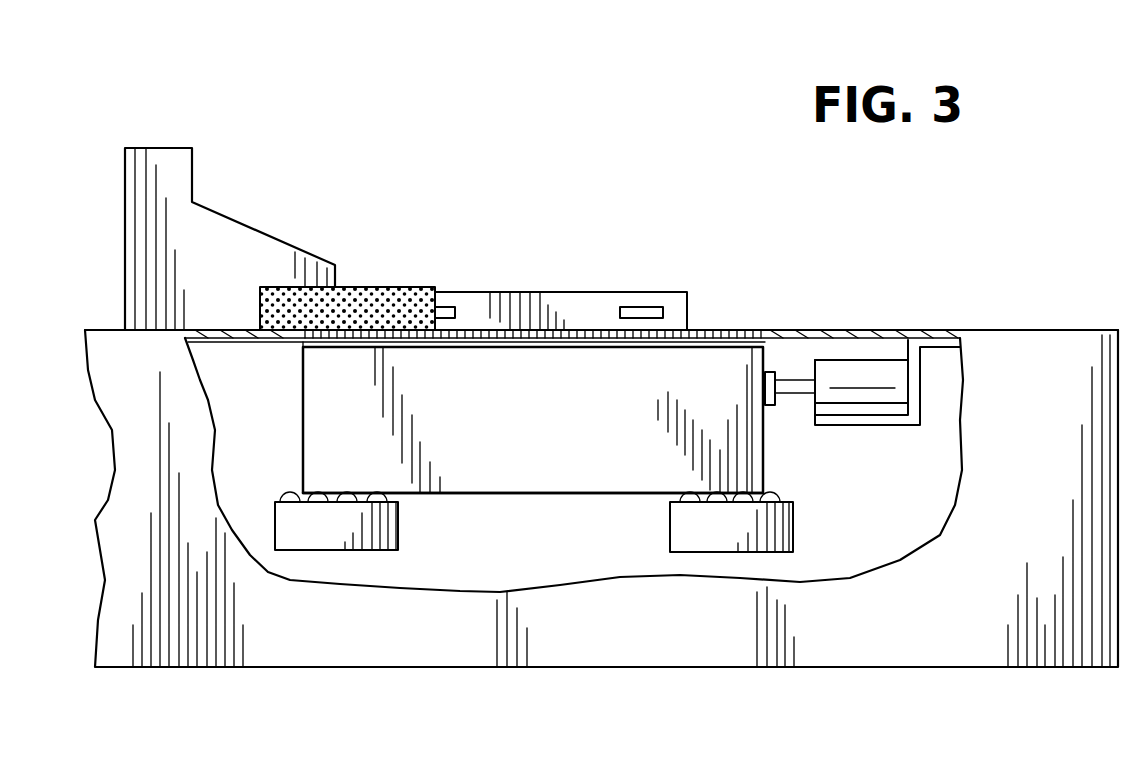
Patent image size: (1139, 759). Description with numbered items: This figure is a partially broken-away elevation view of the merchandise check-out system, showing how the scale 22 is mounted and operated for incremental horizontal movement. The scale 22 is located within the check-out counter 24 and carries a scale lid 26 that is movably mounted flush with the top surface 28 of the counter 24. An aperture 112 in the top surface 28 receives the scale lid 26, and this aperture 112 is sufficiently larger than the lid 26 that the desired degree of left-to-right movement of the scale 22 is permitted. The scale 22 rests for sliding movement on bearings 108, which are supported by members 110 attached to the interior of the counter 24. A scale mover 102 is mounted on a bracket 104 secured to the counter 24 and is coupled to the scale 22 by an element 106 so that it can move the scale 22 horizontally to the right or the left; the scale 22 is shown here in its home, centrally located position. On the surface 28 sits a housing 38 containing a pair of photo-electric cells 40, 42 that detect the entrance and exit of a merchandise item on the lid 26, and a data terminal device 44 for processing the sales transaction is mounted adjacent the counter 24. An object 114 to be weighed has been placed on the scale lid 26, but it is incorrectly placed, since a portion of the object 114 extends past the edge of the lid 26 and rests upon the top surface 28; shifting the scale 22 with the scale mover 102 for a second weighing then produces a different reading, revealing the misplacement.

The scale 22 is at (540, 510).
The check-out counter 24 is at (895, 640).
The scale lid 26 is at (725, 330).
The top surface 28 is at (908, 330).
The housing 38 is at (562, 292).
The photo-electric cell 40 is at (452, 307).
The photo-electric cell 42 is at (642, 307).
The data terminal device 44 is at (142, 210).
The scale mover 102 is at (890, 376).
The bracket 104 is at (893, 425).
The element 106 is at (797, 395).
The bearings 108 is at (291, 493).
The members 110 is at (382, 534).
The aperture 112 is at (782, 330).
The object 114 is at (363, 287).